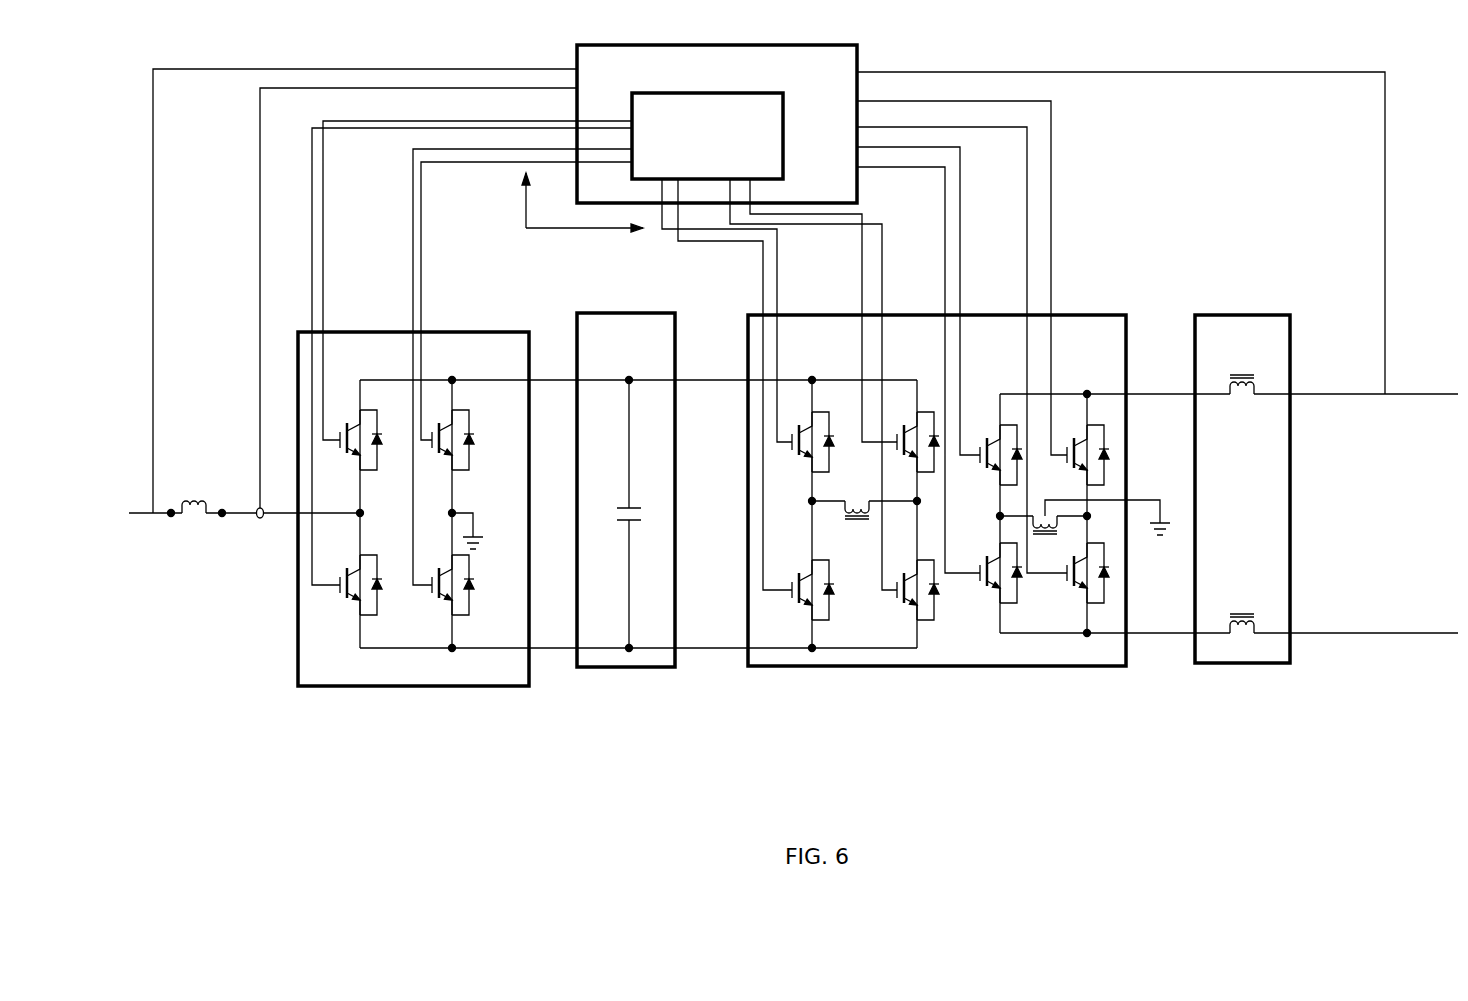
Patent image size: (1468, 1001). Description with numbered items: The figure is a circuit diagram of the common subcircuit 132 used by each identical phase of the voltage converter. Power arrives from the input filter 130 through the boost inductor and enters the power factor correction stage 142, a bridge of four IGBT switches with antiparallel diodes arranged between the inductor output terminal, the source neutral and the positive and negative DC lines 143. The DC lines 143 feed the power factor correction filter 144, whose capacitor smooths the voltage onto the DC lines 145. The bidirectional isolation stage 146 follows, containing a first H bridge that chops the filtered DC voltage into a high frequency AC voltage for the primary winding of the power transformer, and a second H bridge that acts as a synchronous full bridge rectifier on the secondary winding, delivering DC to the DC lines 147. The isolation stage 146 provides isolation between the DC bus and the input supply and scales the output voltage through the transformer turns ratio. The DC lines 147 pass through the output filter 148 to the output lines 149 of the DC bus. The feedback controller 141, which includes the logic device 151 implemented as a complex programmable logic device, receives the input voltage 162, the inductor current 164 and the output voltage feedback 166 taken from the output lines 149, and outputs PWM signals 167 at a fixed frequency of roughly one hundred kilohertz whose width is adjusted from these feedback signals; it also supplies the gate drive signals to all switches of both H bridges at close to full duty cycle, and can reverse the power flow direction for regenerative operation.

The input filter 130 is at (225, 514).
The common subcircuit 132 is at (587, 732).
The feedback controller 141 is at (577, 53).
The power factor correction stage 142 is at (347, 332).
The DC lines 143 is at (469, 514).
The power factor correction filter 144 is at (612, 313).
The DC lines 145 is at (711, 514).
The bidirectional isolation stage 146 is at (1018, 315).
The DC lines 147 is at (1160, 504).
The output filter 148 is at (1240, 315).
The output lines 149 is at (1374, 515).
The logic device 151 is at (707, 136).
The input voltage 162 is at (350, 291).
The inductor current 164 is at (404, 303).
The output voltage feedback 166 is at (1121, 222).
The PWM signals 167 is at (569, 211).